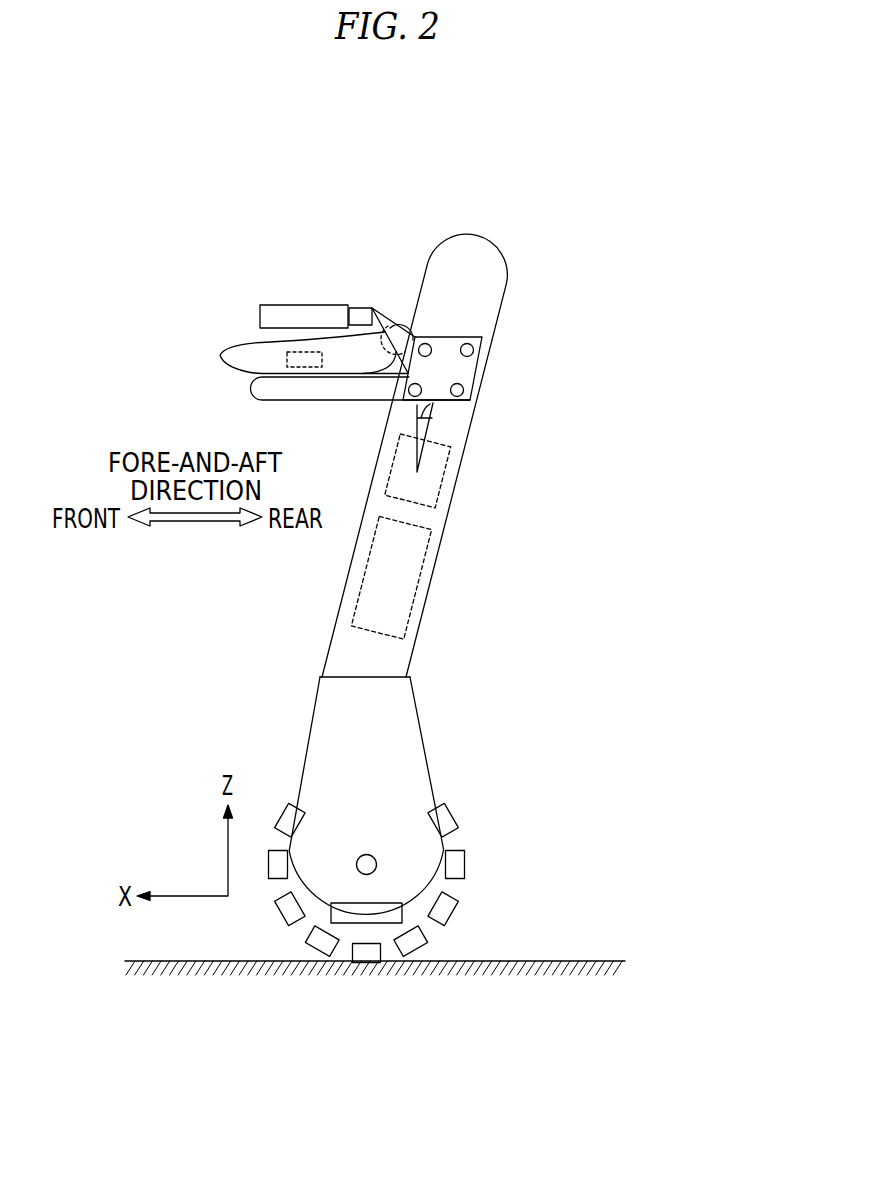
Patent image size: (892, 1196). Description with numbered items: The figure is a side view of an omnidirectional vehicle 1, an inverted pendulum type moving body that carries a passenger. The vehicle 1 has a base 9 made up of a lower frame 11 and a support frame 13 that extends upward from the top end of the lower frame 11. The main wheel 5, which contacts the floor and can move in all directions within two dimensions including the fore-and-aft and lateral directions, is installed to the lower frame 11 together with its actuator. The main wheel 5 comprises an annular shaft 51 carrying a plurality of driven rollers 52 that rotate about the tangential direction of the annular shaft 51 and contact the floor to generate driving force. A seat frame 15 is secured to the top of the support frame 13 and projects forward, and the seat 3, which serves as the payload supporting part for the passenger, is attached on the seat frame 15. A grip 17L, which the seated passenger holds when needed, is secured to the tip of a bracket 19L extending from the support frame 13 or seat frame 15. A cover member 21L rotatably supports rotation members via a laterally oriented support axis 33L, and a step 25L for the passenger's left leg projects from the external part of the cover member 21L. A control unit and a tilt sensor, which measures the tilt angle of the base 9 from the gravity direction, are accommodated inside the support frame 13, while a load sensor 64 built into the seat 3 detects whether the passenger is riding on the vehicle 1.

The omnidirectional vehicle 1 is at (579, 268).
The seat 3 is at (227, 363).
The main wheel 5 is at (404, 930).
The base 9 is at (449, 658).
The lower frame 11 is at (320, 676).
The support frame 13 is at (458, 462).
The seat frame 15 is at (320, 388).
The left grip 17L is at (290, 313).
The left bracket 19L is at (387, 302).
The left cover member 21L is at (408, 737).
The left step 25L is at (393, 913).
The left support axis 33L is at (376, 858).
The annular shaft 51 is at (298, 927).
The driven rollers 52 is at (367, 952).
The load sensor 64 is at (285, 358).